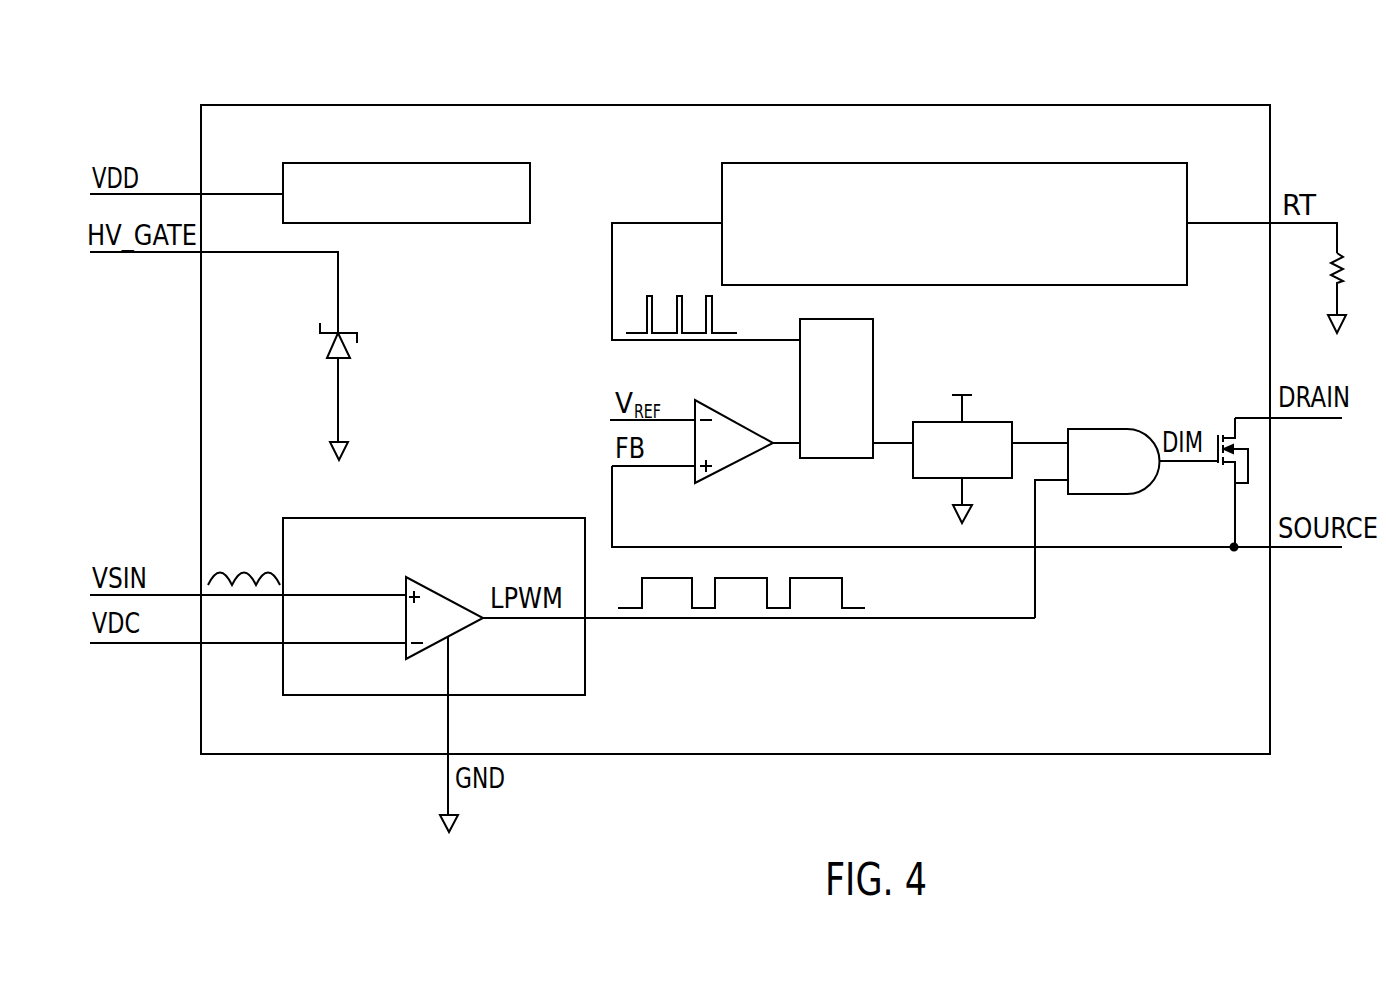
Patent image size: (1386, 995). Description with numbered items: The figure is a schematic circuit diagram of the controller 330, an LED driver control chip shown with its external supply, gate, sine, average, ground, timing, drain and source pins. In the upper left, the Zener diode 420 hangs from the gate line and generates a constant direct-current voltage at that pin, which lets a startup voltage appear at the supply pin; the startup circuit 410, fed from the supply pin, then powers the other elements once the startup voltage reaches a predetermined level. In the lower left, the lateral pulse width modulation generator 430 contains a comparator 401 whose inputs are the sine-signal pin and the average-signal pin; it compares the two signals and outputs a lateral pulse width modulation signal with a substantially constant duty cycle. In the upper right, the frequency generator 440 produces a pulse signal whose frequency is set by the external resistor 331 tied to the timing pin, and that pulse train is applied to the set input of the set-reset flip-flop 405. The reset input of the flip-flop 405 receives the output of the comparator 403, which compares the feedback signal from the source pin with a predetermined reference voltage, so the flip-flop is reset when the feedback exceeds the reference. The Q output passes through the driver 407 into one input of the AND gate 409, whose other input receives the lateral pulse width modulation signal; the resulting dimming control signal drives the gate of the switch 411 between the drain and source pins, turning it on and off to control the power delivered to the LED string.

The controller 330 is at (192, 90).
The startup circuit 410 is at (380, 163).
The Zener diode 420 is at (345, 333).
The frequency generator 440 is at (855, 163).
The flip-flop 405 is at (873, 370).
The comparator 403 is at (718, 410).
The driver 407 is at (997, 422).
The AND gate 409 is at (1092, 429).
The switch 411 is at (1230, 435).
The resistor 331 is at (1370, 248).
The LPWM generator 430 is at (373, 518).
The comparator 401 is at (460, 630).